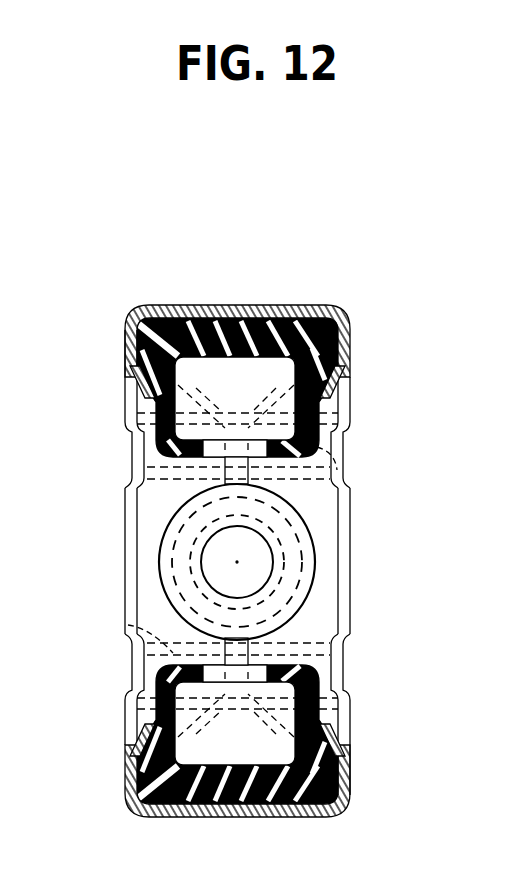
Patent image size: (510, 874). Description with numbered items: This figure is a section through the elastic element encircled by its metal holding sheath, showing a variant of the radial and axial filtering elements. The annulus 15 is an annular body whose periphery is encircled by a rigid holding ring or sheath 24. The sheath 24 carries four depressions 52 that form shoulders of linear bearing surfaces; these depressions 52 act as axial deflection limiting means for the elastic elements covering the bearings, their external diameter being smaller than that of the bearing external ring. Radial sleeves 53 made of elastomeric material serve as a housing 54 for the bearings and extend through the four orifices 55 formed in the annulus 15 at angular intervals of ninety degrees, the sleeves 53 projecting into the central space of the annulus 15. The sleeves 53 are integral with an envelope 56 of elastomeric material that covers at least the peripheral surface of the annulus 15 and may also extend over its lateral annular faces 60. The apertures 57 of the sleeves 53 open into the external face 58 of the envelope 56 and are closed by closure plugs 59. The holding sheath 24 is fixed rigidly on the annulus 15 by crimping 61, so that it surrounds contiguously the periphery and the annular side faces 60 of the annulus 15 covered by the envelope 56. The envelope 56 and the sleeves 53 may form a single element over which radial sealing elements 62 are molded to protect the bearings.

The annulus 15 is at (128, 392).
The holding sheath 24 is at (307, 306).
The depressions 52 is at (350, 486).
The radial sleeves 53 is at (152, 400).
The housing 54 is at (197, 318).
The orifices 55 is at (337, 393).
The envelope 56 is at (128, 348).
The apertures 57 is at (276, 310).
The external face 58 is at (153, 306).
The closure plugs 59 is at (223, 366).
The lateral annular faces 60 is at (133, 365).
The crimping 61 is at (127, 432).
The radial sealing elements 62 is at (268, 440).